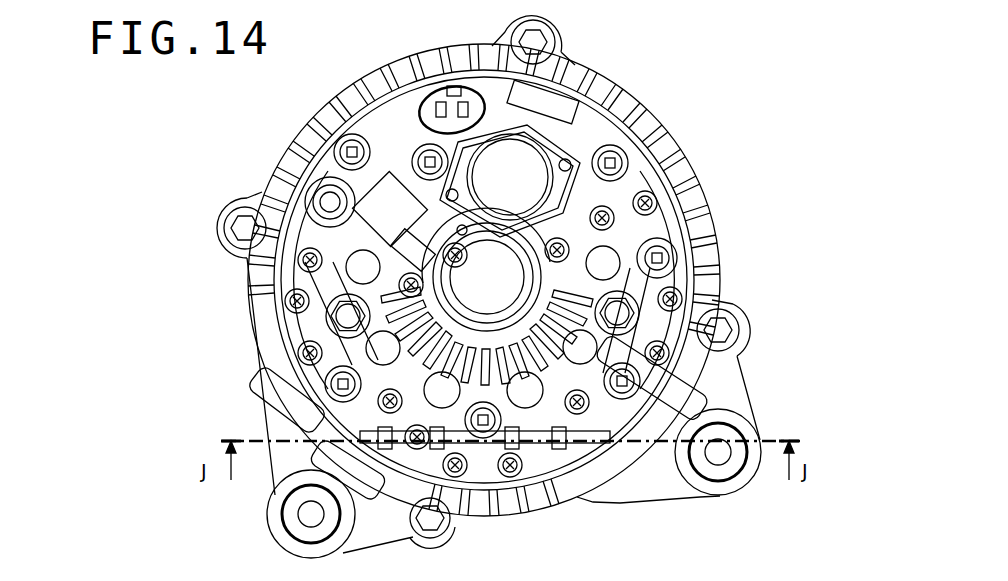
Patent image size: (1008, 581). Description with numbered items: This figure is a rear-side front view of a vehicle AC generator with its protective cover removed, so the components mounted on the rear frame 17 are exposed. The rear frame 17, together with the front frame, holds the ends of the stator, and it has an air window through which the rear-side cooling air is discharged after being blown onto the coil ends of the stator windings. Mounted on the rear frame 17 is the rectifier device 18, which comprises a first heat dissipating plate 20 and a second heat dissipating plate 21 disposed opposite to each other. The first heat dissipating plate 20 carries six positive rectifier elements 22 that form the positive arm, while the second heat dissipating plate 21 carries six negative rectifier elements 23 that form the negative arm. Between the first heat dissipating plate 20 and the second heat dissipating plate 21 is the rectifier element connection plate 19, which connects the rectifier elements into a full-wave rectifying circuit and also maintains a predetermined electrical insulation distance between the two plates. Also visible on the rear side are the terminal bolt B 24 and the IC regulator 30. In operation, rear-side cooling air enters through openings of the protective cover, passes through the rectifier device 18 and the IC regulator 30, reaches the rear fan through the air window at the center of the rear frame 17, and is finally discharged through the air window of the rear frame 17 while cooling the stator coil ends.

The rear frame 17 is at (725, 382).
The rectifier device 18 is at (270, 203).
The rectifier element connection plate 19 is at (662, 287).
The first heat dissipating plate 20 is at (340, 252).
The second heat dissipating plate 21 is at (310, 387).
The positive rectifier element 22 is at (603, 263).
The negative rectifier element 23 is at (677, 253).
The terminal bolt B 24 is at (305, 188).
The IC regulator 30 is at (512, 170).